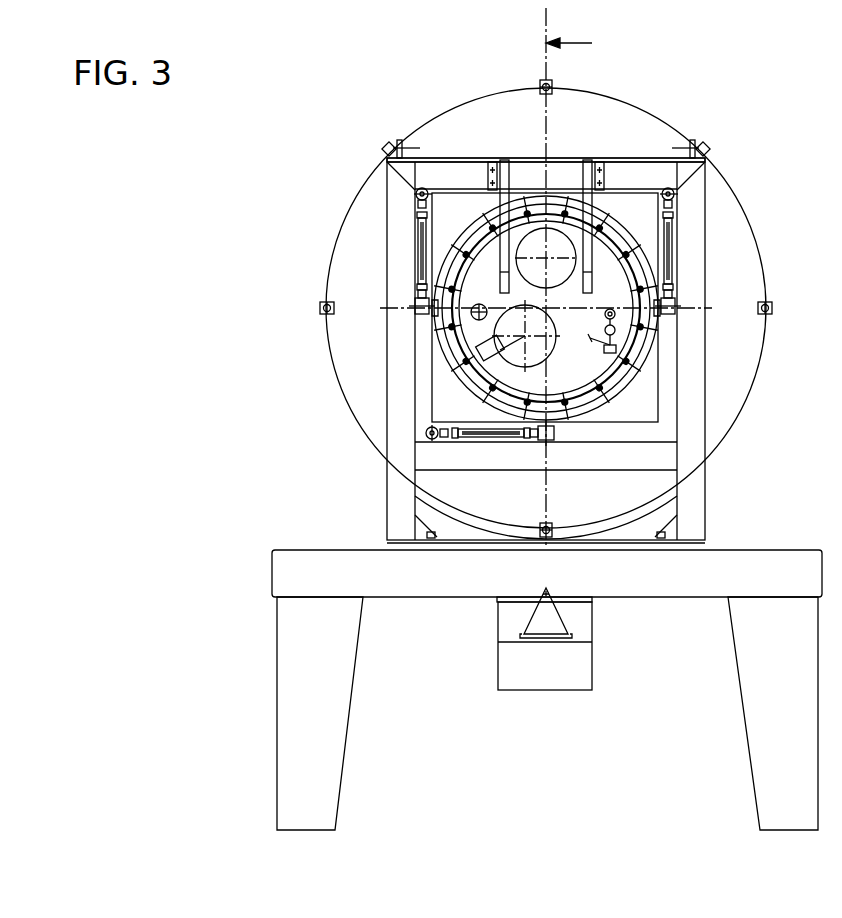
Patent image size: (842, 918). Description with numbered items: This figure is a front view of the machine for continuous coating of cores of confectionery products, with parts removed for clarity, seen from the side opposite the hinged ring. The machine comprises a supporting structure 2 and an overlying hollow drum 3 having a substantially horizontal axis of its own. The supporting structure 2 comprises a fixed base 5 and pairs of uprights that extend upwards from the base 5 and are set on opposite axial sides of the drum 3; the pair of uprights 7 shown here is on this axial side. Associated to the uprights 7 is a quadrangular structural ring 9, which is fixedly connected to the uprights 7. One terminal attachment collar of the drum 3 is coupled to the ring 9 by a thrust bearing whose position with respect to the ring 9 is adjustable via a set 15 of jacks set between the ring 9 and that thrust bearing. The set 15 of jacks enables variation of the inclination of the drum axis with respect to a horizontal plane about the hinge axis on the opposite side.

The supporting structure 2 is at (495, 690).
The hollow drum 3 is at (388, 130).
The fixed base 5 is at (422, 583).
The pair of uprights 7 is at (724, 380).
The structural ring 9 is at (661, 148).
The set of jacks 15 is at (684, 268).